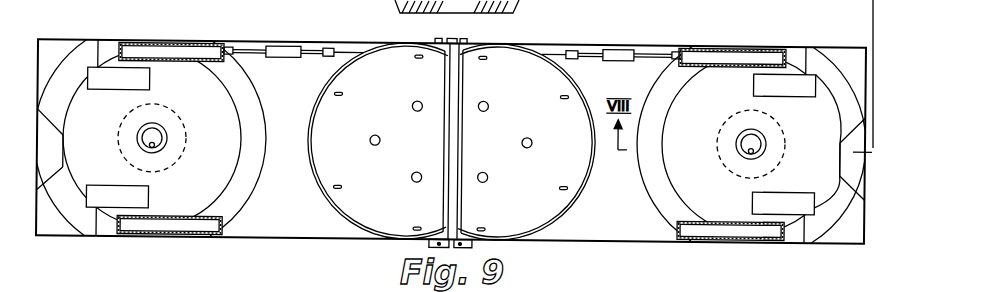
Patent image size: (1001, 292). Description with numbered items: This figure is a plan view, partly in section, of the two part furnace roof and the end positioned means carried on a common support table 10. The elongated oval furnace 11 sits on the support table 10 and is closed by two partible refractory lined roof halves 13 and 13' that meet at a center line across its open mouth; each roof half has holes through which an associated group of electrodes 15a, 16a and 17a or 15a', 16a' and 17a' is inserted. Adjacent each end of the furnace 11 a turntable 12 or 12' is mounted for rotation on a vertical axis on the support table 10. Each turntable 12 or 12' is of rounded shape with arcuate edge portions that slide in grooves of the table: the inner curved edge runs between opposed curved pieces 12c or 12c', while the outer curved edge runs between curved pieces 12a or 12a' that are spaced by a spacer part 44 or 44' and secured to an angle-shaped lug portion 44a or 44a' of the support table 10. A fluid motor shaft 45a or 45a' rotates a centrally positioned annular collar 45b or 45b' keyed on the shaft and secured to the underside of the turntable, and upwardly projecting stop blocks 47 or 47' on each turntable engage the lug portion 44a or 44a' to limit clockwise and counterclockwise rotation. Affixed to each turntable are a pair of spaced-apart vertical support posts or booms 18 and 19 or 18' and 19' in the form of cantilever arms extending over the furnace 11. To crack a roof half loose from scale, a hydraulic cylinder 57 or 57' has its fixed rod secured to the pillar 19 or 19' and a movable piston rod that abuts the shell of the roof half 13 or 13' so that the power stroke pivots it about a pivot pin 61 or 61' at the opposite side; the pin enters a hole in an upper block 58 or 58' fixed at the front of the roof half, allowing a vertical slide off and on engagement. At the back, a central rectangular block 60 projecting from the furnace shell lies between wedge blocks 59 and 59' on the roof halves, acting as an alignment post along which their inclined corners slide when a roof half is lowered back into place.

The support table 10 is at (603, 236).
The furnace 11 is at (330, 214).
The turntable 12 is at (751, 144).
The turntable 12' is at (152, 138).
The curved piece 12a is at (794, 129).
The curved piece 12a' is at (100, 119).
The curved piece 12c is at (677, 143).
The curved piece 12c' is at (220, 139).
The roof half 13 is at (537, 143).
The roof half 13' is at (361, 141).
The electrode 15a is at (505, 177).
The electrode 15a' is at (390, 176).
The electrode 16a is at (546, 143).
The electrode 16a' is at (348, 140).
The electrode 17a is at (503, 103).
The electrode 17a' is at (391, 100).
The support post 18 is at (731, 246).
The support post 18' is at (170, 241).
The support post 19 is at (733, 41).
The support post 19' is at (172, 32).
The spacer part 44 is at (842, 133).
The spacer part 44' is at (60, 119).
The lug portion 44a is at (813, 160).
The lug portion 44a' is at (77, 147).
The shaft 45a is at (771, 144).
The shaft 45a' is at (172, 138).
The annular collar 45b is at (724, 172).
The annular collar 45b' is at (113, 159).
The stop block 47 is at (760, 144).
The stop block 47' is at (139, 135).
The hydraulic cylinder 57 is at (611, 37).
The hydraulic cylinder 57' is at (294, 31).
The upper block 58 is at (520, 143).
The upper block 58' is at (380, 142).
The wedge block 59 is at (481, 33).
The wedge block 59' is at (420, 31).
The central rectangular block 60 is at (452, 38).
The pivot pin 61 is at (491, 252).
The pivot pin 61' is at (410, 252).